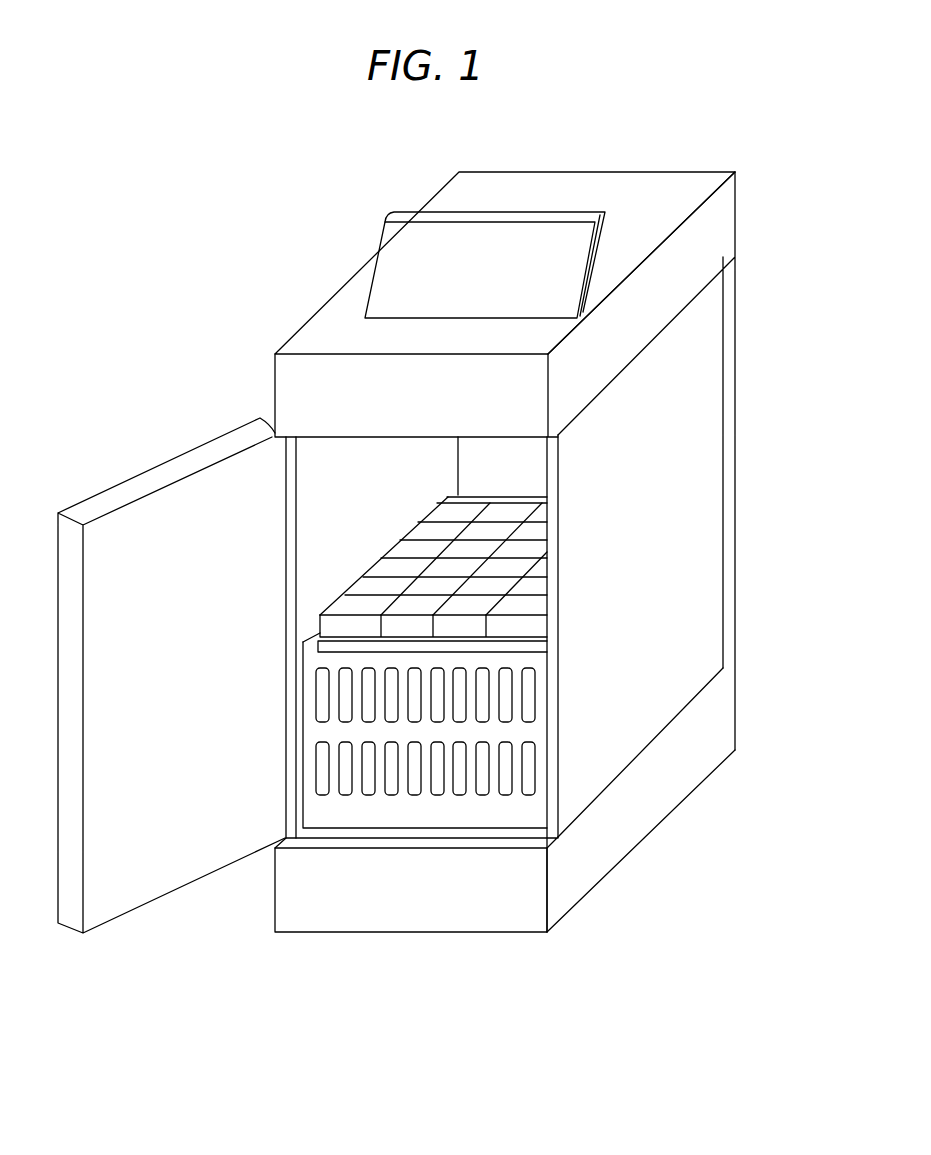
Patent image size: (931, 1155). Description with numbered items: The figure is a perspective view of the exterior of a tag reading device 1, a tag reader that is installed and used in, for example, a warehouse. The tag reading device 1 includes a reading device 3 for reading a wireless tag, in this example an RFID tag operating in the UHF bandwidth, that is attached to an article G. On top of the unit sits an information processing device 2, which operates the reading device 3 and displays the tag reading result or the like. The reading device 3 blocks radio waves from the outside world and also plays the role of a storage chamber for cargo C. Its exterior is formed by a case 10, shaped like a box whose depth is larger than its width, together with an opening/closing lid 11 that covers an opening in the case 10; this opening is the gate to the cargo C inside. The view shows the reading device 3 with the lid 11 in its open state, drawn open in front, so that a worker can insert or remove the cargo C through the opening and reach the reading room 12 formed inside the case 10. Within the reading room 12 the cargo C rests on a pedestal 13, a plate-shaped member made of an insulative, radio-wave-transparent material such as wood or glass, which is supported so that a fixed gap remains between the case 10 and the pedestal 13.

The tag reading device 1 is at (574, 160).
The information processing device 2 is at (403, 243).
The reading device 3 is at (718, 224).
The case 10 is at (647, 593).
The opening/closing lid 11 is at (180, 465).
The reading room 12 is at (522, 472).
The pedestal 13 is at (510, 915).
The article G is at (518, 632).
The cargo C is at (528, 817).